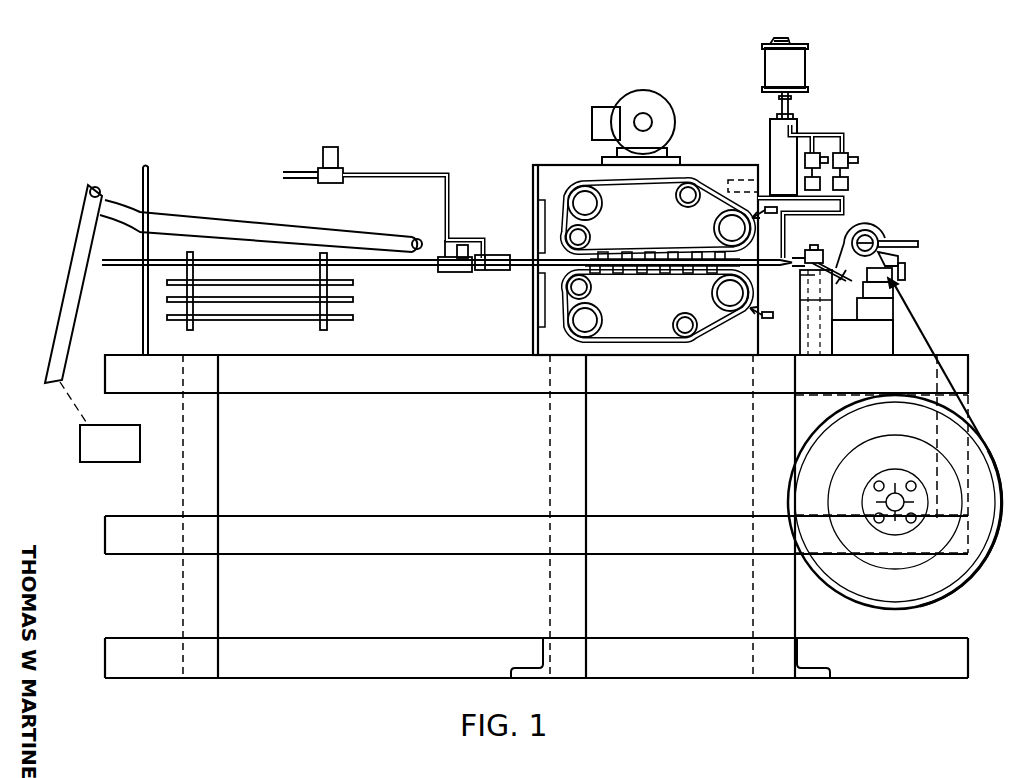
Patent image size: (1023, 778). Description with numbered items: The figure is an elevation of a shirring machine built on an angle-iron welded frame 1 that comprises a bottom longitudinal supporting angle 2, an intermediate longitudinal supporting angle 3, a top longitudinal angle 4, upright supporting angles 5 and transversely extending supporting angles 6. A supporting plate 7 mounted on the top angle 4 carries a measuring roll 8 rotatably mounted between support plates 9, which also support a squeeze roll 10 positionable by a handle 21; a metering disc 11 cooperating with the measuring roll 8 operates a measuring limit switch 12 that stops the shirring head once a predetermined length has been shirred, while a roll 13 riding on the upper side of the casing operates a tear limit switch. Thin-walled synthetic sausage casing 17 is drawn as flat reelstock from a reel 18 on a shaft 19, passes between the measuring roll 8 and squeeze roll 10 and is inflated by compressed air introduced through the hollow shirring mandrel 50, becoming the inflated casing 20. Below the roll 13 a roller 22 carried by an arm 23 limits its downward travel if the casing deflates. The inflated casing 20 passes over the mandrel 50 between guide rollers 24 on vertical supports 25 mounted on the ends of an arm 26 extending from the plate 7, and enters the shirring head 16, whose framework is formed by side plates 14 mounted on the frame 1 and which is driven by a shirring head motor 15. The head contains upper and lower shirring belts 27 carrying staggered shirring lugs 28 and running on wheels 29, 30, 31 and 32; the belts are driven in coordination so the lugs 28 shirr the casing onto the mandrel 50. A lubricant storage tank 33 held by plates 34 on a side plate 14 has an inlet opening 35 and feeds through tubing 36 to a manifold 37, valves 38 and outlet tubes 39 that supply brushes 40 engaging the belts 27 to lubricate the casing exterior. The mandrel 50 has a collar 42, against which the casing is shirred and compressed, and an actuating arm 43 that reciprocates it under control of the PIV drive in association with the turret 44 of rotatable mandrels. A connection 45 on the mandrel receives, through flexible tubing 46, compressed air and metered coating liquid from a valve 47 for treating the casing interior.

The angle-iron welded frame 1 is at (845, 634).
The bottom longitudinal supporting angle 2 is at (536, 649).
The intermediate longitudinal supporting angle 3 is at (536, 525).
The top longitudinal angle 4 is at (536, 384).
The upright supporting angles 5 is at (575, 516).
The transversely extending supporting angles 6 is at (670, 658).
The supporting plate 7 is at (864, 348).
The measuring roll 8 is at (867, 304).
The support plates 9 is at (899, 258).
The squeeze roll 10 is at (866, 241).
The metering disc 11 is at (913, 273).
The measuring limit switch 12 is at (909, 291).
The roll 13 is at (817, 244).
The shirring head side plates 14 is at (645, 250).
The shirring head motor 15 is at (635, 120).
The shirring head 16 is at (510, 168).
The synthetic sausage casing 17 is at (947, 444).
The reel 18 is at (895, 517).
The shaft 19 is at (878, 498).
The inflated casing 20 is at (802, 246).
The handle 21 is at (900, 233).
The roller 22 is at (829, 286).
The arm 23 is at (840, 277).
The guide rollers 24 is at (799, 292).
The vertical supports 25 is at (807, 320).
The arm 26 is at (826, 323).
The shirring belts 27 is at (658, 275).
The shirring lugs 28 is at (662, 262).
The pulley or wheel 29 is at (591, 261).
The pulley or wheel 30 is at (599, 261).
The pulley or wheel 31 is at (675, 260).
The pulley or wheel 32 is at (716, 260).
The lubricant storage tank 33 is at (772, 68).
The plates 34 is at (771, 157).
The inlet opening 35 is at (765, 36).
The tubing 36 is at (773, 105).
The manifold 37 is at (801, 188).
The valves 38 is at (826, 159).
The outlet tubes 39 is at (838, 193).
The brushes 40 is at (762, 273).
The collar 42 is at (492, 276).
The actuating arm 43 is at (233, 314).
The turret 44 is at (272, 291).
The connection 45 is at (455, 268).
The flexible tubing 46 is at (413, 216).
The valve 47 is at (313, 163).
The shirring mandrel 50 is at (447, 250).